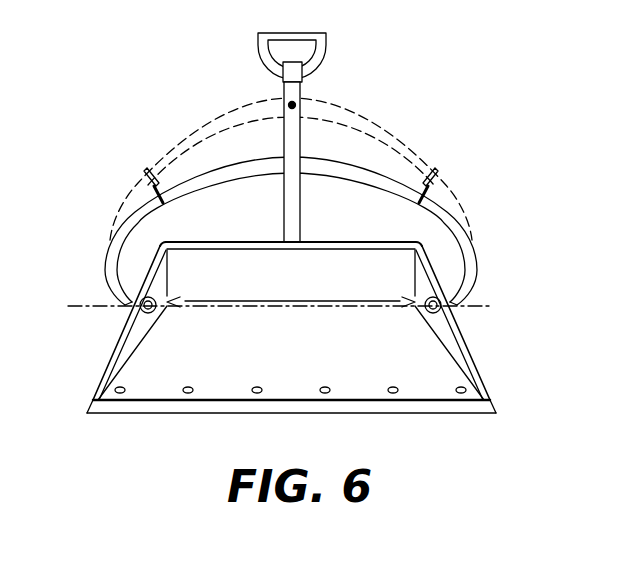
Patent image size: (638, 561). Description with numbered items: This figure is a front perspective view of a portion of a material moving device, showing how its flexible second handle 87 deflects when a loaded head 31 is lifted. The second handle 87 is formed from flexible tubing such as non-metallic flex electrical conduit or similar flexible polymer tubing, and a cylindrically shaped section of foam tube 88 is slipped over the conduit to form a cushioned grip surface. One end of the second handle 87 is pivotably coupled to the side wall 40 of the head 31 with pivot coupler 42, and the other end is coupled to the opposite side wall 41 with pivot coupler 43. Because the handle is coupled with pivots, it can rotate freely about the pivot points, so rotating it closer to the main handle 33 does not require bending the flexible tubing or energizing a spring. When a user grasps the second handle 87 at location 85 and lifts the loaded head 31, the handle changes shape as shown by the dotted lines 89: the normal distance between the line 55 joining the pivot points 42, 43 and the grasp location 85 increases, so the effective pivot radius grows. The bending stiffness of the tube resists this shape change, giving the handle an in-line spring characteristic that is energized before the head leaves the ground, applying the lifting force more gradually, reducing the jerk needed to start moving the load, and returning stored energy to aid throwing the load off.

The head 31 is at (165, 380).
The handle 33 is at (283, 212).
The side wall 40 is at (478, 360).
The opposite side wall 41 is at (112, 360).
The pivot coupler 42 is at (455, 311).
The pivot coupler 43 is at (127, 308).
The line joining pivot points 55 is at (494, 305).
The grasp location 85 is at (291, 104).
The second handle 87 is at (480, 252).
The foam tube 88 is at (367, 186).
The dotted lines 89 is at (355, 108).